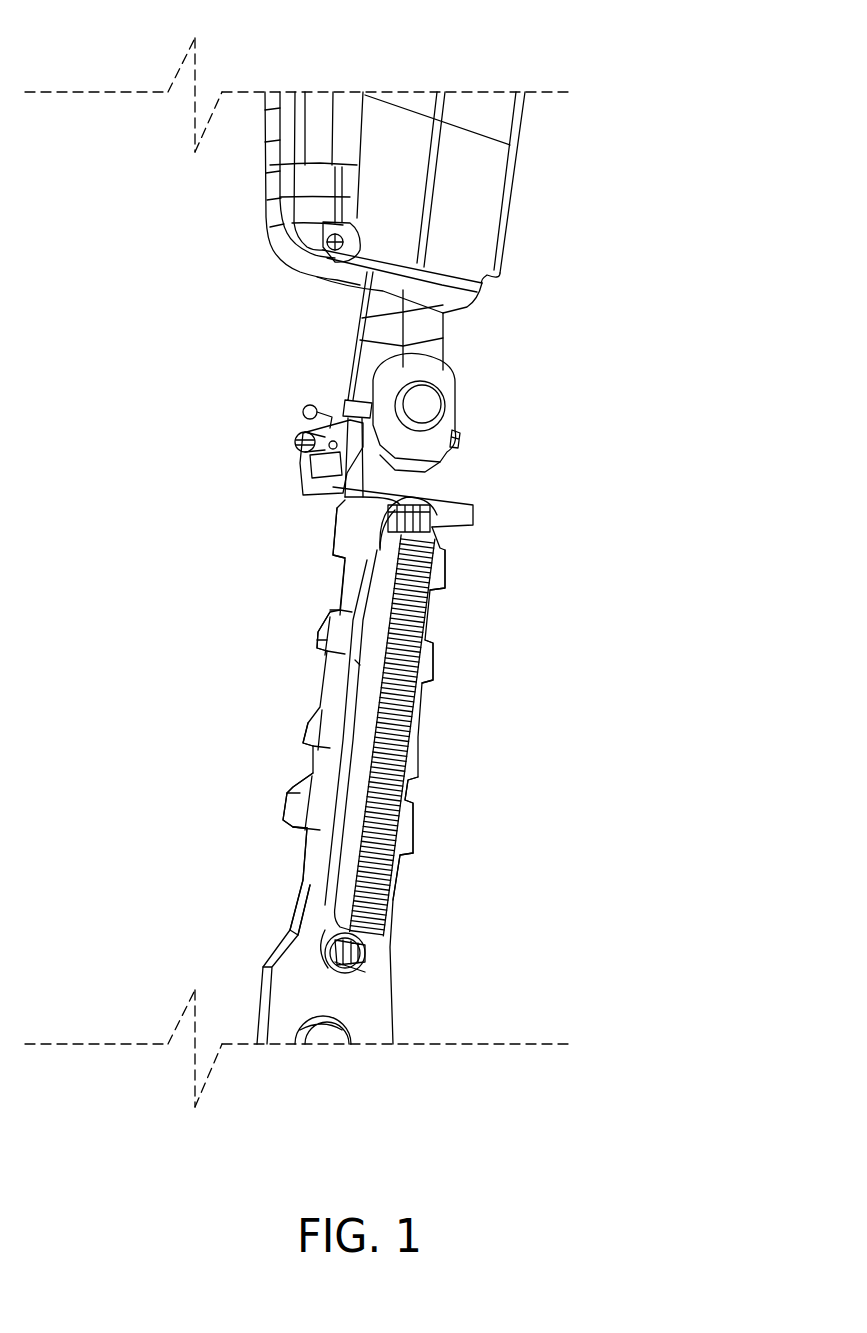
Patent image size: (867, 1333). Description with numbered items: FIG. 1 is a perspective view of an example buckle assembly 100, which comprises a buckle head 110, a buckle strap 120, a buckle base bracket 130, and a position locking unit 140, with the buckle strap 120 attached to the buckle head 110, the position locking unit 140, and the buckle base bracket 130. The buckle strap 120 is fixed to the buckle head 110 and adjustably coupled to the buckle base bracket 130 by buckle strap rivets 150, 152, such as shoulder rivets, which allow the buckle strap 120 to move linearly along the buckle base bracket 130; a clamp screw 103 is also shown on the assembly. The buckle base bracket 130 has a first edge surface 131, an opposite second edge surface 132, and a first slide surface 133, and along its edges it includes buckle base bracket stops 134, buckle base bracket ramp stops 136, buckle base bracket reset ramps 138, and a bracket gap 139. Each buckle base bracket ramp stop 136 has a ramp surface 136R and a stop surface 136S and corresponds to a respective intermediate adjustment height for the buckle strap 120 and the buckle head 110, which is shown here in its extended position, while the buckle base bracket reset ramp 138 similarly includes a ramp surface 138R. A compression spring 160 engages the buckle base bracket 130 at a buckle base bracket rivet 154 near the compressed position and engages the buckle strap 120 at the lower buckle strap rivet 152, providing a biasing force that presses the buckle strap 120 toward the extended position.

The buckle assembly 100 is at (632, 110).
The buckle head 110 is at (470, 205).
The buckle strap 120 is at (432, 363).
The buckle base bracket 130 is at (267, 970).
The first edge surface 131 is at (297, 903).
The second edge surface 132 is at (398, 897).
The first slide surface 133 is at (392, 1014).
The buckle base bracket stop 134 is at (340, 412).
The buckle base bracket ramp stop 136 is at (338, 543).
The ramp surface 136R is at (327, 618).
The stop surface 136S is at (327, 655).
The buckle base bracket reset ramp 138 is at (282, 808).
The ramp surface 138R is at (290, 785).
The bracket gap 139 is at (368, 686).
The position locking unit 140 is at (310, 508).
The clamp screw 103 is at (313, 473).
The buckle strap rivet 150 is at (427, 408).
The buckle strap rivet 152 is at (423, 502).
The buckle base bracket rivet 154 is at (400, 957).
The compression spring 160 is at (410, 700).